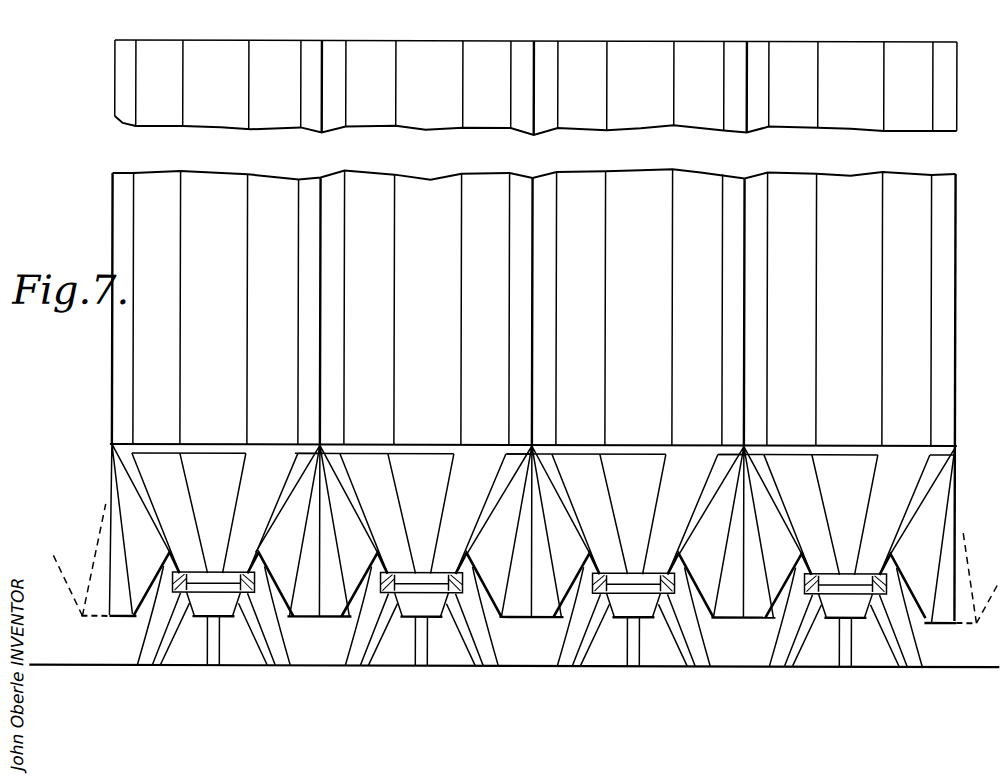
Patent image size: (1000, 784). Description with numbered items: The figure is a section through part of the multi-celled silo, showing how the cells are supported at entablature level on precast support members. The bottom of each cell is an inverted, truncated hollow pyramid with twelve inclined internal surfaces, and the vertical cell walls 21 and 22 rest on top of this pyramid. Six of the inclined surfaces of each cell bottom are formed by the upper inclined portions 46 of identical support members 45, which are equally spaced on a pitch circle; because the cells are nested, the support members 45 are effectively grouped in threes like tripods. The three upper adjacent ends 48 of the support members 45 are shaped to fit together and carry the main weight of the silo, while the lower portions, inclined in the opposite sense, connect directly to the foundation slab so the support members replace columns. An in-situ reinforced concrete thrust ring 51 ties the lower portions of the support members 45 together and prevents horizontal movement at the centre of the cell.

The vertical cell wall 21 is at (915, 312).
The vertical cell wall 22 is at (945, 393).
The support member 45 is at (908, 645).
The upper inclined portion 46 is at (915, 530).
The upper adjacent end 48 is at (761, 451).
The thrust ring 51 is at (800, 610).